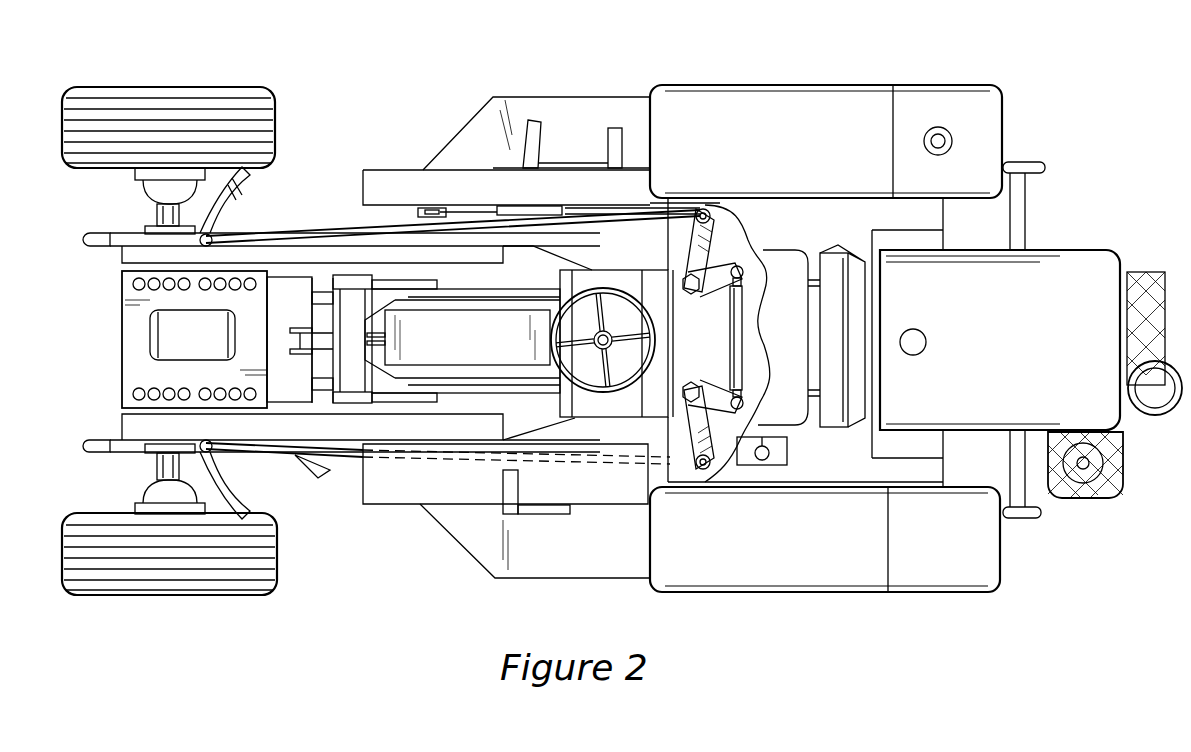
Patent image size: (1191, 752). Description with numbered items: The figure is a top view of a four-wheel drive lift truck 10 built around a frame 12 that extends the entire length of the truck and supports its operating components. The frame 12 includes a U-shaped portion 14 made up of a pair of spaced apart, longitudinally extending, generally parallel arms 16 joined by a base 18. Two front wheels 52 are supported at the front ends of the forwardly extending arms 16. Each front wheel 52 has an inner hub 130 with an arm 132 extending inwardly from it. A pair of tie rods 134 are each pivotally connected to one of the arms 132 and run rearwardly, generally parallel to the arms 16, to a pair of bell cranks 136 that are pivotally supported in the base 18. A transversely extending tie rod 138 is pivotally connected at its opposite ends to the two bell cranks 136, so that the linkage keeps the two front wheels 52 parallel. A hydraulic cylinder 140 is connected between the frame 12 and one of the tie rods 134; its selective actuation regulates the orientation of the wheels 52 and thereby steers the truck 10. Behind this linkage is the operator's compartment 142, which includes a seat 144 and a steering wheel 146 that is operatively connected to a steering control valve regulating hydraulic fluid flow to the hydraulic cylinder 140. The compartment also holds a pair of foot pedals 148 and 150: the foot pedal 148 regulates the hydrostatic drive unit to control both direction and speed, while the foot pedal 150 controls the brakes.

The lift truck 10 is at (390, 110).
The frame 12 is at (948, 452).
The U-shaped portion 14 is at (405, 515).
The arms 16 is at (122, 253).
The base 18 is at (686, 236).
The front wheels 52 is at (80, 130).
The inner hub 130 is at (137, 172).
The arm 132 is at (235, 212).
The tie rods 134 is at (330, 228).
The bell cranks 136 is at (702, 276).
The transversely extending tie rod 138 is at (733, 326).
The hydraulic cylinder 140 is at (478, 192).
The operator's compartment 142 is at (810, 430).
The seat 144 is at (788, 282).
The steering wheel 146 is at (600, 395).
The foot pedal 148 is at (540, 140).
The foot pedal 150 is at (504, 497).